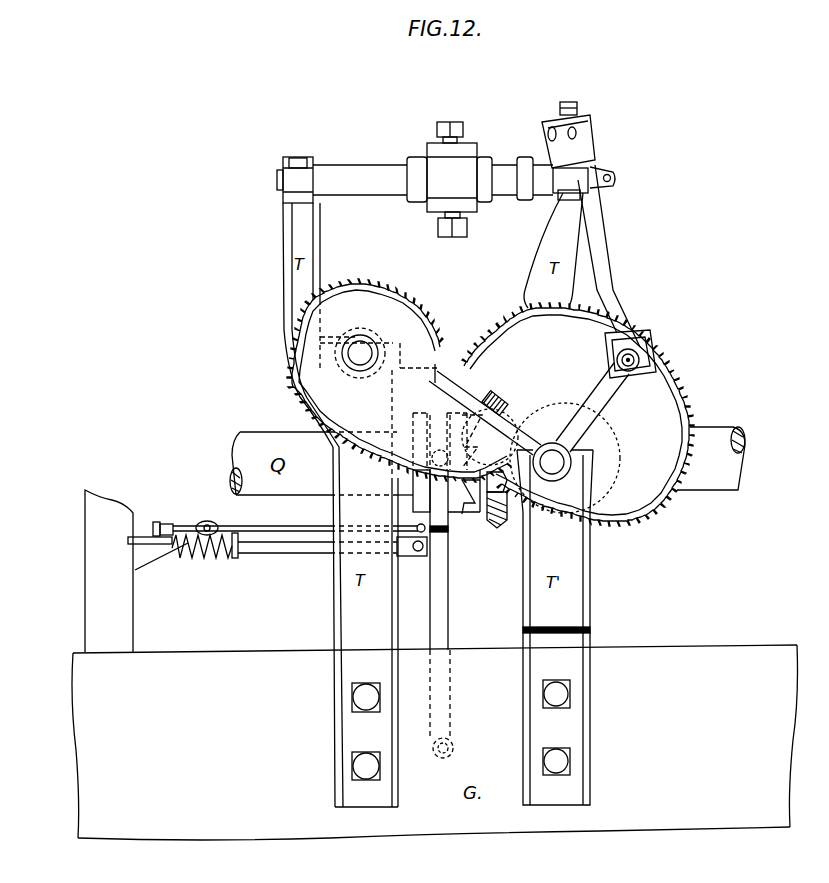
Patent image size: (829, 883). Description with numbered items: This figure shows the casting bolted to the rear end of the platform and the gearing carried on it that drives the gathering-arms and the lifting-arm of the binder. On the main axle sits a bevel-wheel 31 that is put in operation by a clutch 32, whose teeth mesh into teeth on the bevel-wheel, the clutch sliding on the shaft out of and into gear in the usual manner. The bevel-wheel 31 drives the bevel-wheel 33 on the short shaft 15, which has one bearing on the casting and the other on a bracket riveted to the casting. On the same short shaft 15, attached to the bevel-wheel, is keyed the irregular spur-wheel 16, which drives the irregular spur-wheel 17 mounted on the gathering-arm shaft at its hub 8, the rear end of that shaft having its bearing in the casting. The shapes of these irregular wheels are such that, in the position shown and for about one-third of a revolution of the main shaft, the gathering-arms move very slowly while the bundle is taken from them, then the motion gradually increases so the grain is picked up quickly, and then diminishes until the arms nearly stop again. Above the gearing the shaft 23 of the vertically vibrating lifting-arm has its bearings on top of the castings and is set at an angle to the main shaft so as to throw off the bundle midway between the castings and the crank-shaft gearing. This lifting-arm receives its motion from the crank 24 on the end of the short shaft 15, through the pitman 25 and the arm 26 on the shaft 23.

The shaft 23 is at (415, 179).
The arm 26 is at (547, 145).
The pitman 25 is at (606, 254).
The crank 24 is at (592, 407).
The irregular spur-wheel 16 is at (578, 414).
The irregular spur-wheel 17 is at (402, 380).
The short shaft 15 is at (552, 462).
The shaft 8 is at (360, 353).
The bevel-wheel 33 is at (504, 482).
The bevel-wheel 31 is at (497, 518).
The clutch 32 is at (441, 527).